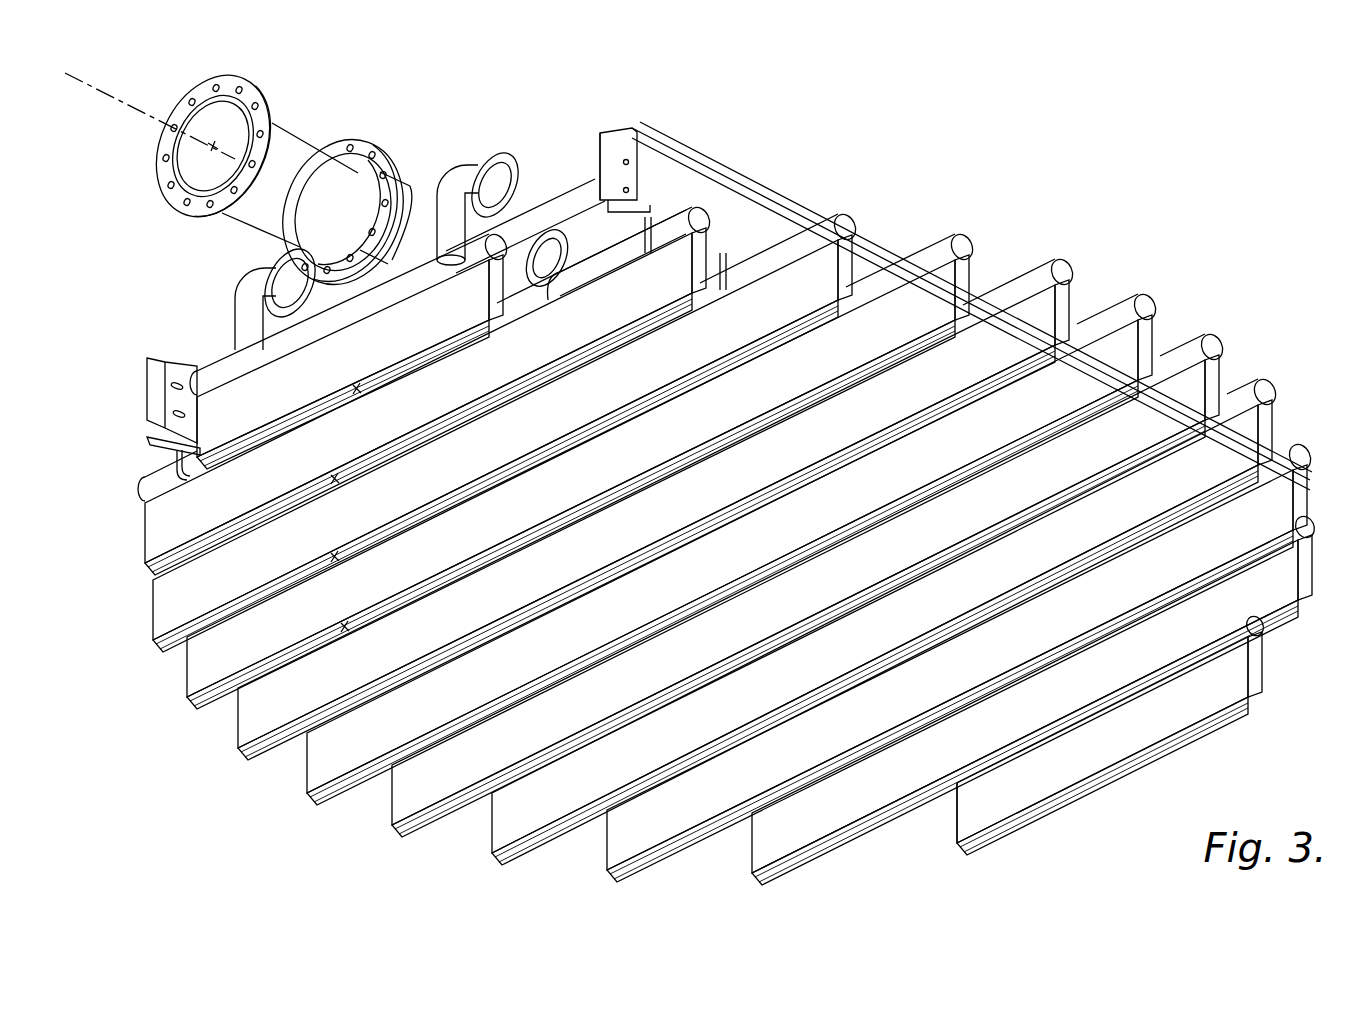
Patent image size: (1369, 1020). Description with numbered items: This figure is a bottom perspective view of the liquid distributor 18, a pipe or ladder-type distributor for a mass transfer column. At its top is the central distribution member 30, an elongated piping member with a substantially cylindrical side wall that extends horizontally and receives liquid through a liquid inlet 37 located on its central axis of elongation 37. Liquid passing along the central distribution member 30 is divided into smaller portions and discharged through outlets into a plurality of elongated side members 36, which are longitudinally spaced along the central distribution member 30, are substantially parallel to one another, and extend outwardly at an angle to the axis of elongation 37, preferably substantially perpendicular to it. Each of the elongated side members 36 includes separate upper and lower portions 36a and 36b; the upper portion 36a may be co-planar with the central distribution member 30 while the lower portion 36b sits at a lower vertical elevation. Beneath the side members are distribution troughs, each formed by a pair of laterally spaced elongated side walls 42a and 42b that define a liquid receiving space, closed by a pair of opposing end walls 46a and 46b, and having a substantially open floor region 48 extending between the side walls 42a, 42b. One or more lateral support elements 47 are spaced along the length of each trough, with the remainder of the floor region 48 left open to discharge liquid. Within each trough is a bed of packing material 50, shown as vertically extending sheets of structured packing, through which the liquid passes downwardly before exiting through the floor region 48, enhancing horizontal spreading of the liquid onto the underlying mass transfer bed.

The liquid distributor 18 is at (806, 121).
The central distribution member 30 is at (415, 208).
The elongated side members 36 is at (968, 245).
The upper portion of elongated side member 36a is at (560, 177).
The lower portion of elongated side member 36b is at (679, 222).
The central axis of elongation 37 is at (122, 103).
The elongated side wall 42a is at (1276, 596).
The elongated side wall 42b is at (1318, 577).
The end wall 46a is at (1259, 701).
The end wall 46b is at (947, 824).
The lateral support elements 47 is at (356, 390).
The floor region 48 is at (795, 866).
The packing material 50 is at (248, 754).